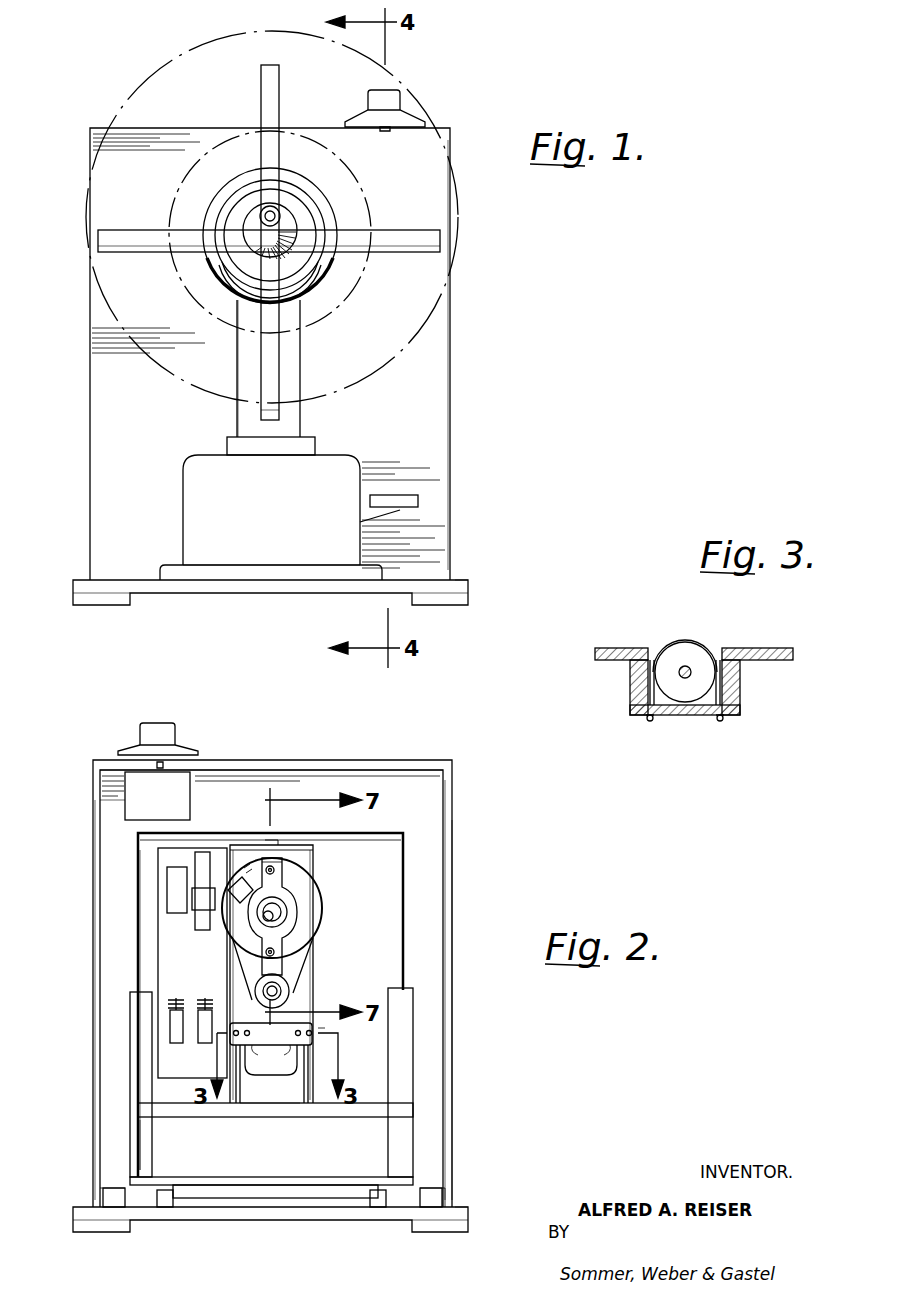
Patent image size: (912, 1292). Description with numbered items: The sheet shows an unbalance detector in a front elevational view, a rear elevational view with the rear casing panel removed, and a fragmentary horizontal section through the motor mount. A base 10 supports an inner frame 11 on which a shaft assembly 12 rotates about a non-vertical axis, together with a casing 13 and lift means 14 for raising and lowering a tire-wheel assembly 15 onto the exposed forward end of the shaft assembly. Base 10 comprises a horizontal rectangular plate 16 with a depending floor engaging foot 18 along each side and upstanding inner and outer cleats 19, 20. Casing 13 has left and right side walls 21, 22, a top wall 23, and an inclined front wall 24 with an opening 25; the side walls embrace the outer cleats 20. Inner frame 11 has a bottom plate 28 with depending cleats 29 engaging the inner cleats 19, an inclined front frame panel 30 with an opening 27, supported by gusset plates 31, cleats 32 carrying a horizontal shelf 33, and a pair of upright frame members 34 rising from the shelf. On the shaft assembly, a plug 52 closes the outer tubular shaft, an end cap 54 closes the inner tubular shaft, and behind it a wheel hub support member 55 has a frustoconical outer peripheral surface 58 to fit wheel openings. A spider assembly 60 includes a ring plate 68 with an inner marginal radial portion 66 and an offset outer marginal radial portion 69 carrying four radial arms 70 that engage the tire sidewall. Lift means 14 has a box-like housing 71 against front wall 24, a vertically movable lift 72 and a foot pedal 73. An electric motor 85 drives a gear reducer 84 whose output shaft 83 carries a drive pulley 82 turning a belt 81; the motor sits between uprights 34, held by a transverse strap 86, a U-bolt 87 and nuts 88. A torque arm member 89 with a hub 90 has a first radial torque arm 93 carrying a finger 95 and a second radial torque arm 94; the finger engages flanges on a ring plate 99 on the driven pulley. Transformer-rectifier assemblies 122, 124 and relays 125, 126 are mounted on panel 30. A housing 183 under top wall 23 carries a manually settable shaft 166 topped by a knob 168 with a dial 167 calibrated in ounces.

In FIG. 1, the base 10 is at (471, 575).
In FIG. 2, the base 10 is at (472, 1203).
In FIG. 2, the inner frame 11 is at (410, 862).
In FIG. 1, the shaft assembly 12 is at (305, 212).
In FIG. 2, the shaft assembly 12 is at (329, 911).
In FIG. 1, the casing 13 is at (457, 326).
In FIG. 2, the casing 13 is at (88, 824).
In FIG. 1, the lift means 14 is at (178, 458).
In FIG. 1, the tire-wheel assembly 15 is at (154, 70).
In FIG. 1, the horizontal rectangular plate 16 is at (213, 590).
In FIG. 2, the horizontal rectangular plate 16 is at (230, 1220).
In FIG. 1, the floor engaging foot 18 is at (83, 600).
In FIG. 2, the floor engaging foot 18 is at (95, 1230).
In FIG. 2, the inner cleat 19 is at (115, 1207).
In FIG. 2, the outer cleat 20 is at (103, 1198).
In FIG. 2, the left side wall 21 is at (93, 903).
In FIG. 2, the right side wall 22 is at (452, 880).
In FIG. 2, the top wall 23 is at (310, 762).
In FIG. 1, the front wall 24 is at (430, 405).
In FIG. 2, the front wall 24 is at (425, 805).
In FIG. 1, the opening 25 is at (240, 373).
In FIG. 2, the opening 25 is at (283, 1103).
In FIG. 3, the opening 27 is at (718, 660).
In FIG. 2, the bottom plate 28 is at (266, 1160).
In FIG. 2, the depending cleat 29 is at (165, 1207).
In FIG. 2, the front frame panel 30 is at (138, 943).
In FIG. 3, the front frame panel 30 is at (770, 648).
In FIG. 2, the gusset plate 31 is at (130, 1025).
In FIG. 2, the cleat 32 is at (150, 1150).
In FIG. 2, the horizontal shelf 33 is at (290, 1103).
In FIG. 2, the upright frame member 34 is at (236, 1103).
In FIG. 3, the upright frame member 34 is at (630, 680).
In FIG. 2, the plug 52 is at (274, 918).
In FIG. 1, the end cap 54 is at (275, 212).
In FIG. 1, the wheel hub support member 55 is at (212, 280).
In FIG. 1, the outer peripheral surface 58 is at (250, 210).
In FIG. 1, the spider assembly 60 is at (302, 347).
In FIG. 1, the inner marginal radial portion 66 is at (232, 305).
In FIG. 1, the ring plate 68 is at (330, 290).
In FIG. 1, the outer marginal radial portion 69 is at (325, 262).
In FIG. 1, the radial arm 70 is at (262, 80).
In FIG. 1, the housing 71 is at (185, 505).
In FIG. 1, the lift 72 is at (228, 443).
In FIG. 1, the foot pedal 73 is at (410, 495).
In FIG. 2, the belt 81 is at (276, 952).
In FIG. 2, the drive pulley 82 is at (276, 991).
In FIG. 2, the output shaft 83 is at (290, 985).
In FIG. 2, the gear reducer 84 is at (262, 972).
In FIG. 2, the electric motor 85 is at (255, 1075).
In FIG. 3, the electric motor 85 is at (672, 648).
In FIG. 2, the transverse strap 86 is at (318, 1030).
In FIG. 3, the transverse strap 86 is at (690, 715).
In FIG. 2, the U-bolt 87 is at (295, 1034).
In FIG. 3, the U-bolt 87 is at (693, 641).
In FIG. 2, the nut 88 is at (288, 1047).
In FIG. 3, the nut 88 is at (652, 722).
In FIG. 2, the torque arm member 89 is at (291, 878).
In FIG. 2, the hub 90 is at (282, 908).
In FIG. 2, the first radial torque arm 93 is at (262, 938).
In FIG. 2, the second radial torque arm 94 is at (274, 862).
In FIG. 2, the finger 95 is at (268, 952).
In FIG. 2, the ring plate 99 is at (308, 887).
In FIG. 2, the first transformer-rectifier assembly 122 is at (180, 1045).
In FIG. 2, the second transformer-rectifier assembly 124 is at (205, 1045).
In FIG. 2, the relay 125 is at (175, 878).
In FIG. 2, the relay 126 is at (200, 925).
In FIG. 1, the manually settable shaft 166 is at (385, 130).
In FIG. 2, the manually settable shaft 166 is at (160, 770).
In FIG. 1, the dial 167 is at (422, 117).
In FIG. 2, the dial 167 is at (195, 750).
In FIG. 1, the knob 168 is at (395, 100).
In FIG. 2, the knob 168 is at (172, 735).
In FIG. 2, the housing 183 is at (130, 798).